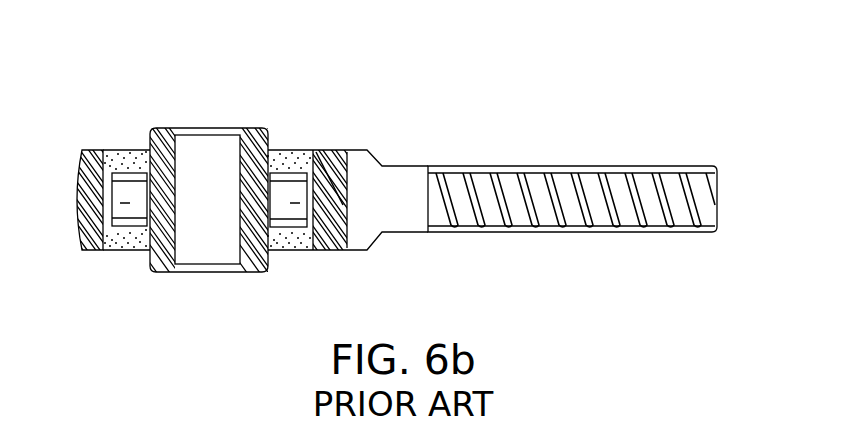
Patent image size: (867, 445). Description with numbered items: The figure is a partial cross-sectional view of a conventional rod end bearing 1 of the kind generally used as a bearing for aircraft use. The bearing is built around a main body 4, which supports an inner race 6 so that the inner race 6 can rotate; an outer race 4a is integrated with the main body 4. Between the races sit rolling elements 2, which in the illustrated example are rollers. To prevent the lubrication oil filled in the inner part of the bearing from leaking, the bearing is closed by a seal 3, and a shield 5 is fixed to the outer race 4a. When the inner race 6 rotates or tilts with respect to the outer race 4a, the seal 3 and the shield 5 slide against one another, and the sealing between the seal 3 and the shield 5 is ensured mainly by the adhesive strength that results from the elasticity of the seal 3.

The rod end bearing 1 is at (506, 88).
The rolling elements 2 is at (127, 245).
The seal 3 is at (273, 138).
The main body 4 is at (393, 166).
The outer race 4a is at (367, 150).
The shield 5 is at (303, 138).
The inner race 6 is at (262, 128).